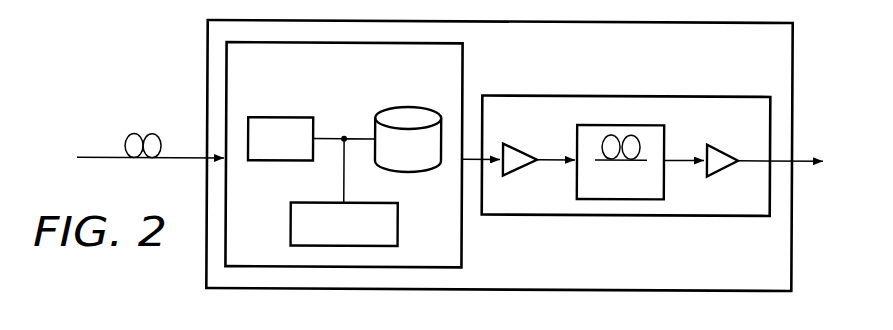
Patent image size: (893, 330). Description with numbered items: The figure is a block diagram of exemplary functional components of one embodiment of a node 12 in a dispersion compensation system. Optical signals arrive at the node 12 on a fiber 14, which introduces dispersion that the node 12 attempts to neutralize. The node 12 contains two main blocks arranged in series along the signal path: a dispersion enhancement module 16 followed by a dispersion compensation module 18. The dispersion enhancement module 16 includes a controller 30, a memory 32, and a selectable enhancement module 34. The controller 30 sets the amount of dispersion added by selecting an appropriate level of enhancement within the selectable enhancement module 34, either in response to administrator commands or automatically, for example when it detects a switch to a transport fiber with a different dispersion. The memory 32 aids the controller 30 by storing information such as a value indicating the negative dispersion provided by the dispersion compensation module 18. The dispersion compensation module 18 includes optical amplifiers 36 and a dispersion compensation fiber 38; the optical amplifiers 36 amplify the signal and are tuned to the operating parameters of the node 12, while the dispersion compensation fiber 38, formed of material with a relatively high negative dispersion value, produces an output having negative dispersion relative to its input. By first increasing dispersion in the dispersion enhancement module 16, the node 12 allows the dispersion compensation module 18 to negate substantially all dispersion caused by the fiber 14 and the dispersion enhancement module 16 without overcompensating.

The node 12 is at (206, 95).
The fiber 14 is at (100, 157).
The dispersion enhancement module 16 is at (462, 239).
The dispersion compensation module 18 is at (637, 93).
The controller 30 is at (280, 117).
The memory 32 is at (407, 105).
The selectable enhancement module 34 is at (291, 222).
The optical amplifiers 36 is at (522, 147).
The dispersion compensation fiber 38 is at (577, 177).